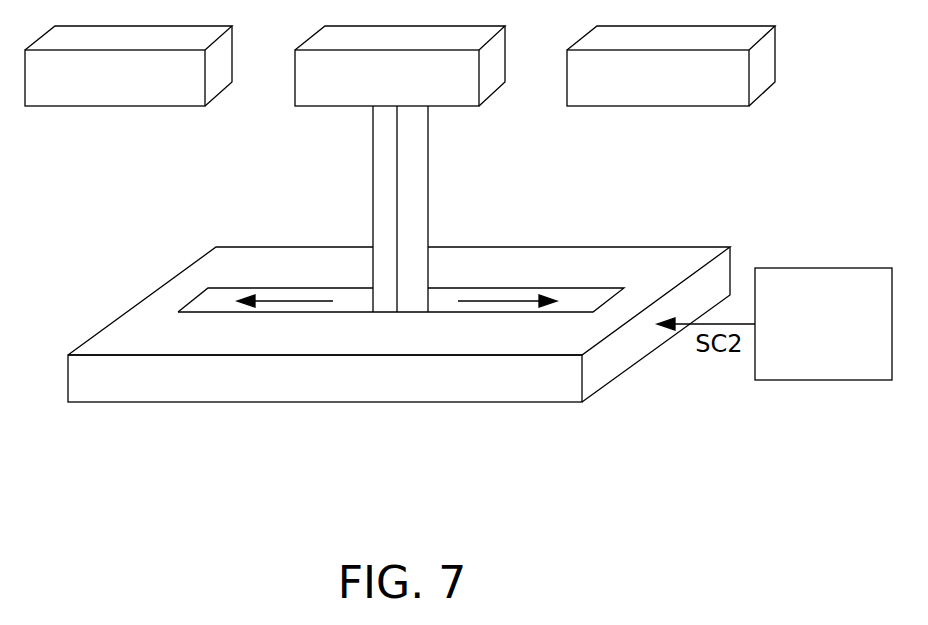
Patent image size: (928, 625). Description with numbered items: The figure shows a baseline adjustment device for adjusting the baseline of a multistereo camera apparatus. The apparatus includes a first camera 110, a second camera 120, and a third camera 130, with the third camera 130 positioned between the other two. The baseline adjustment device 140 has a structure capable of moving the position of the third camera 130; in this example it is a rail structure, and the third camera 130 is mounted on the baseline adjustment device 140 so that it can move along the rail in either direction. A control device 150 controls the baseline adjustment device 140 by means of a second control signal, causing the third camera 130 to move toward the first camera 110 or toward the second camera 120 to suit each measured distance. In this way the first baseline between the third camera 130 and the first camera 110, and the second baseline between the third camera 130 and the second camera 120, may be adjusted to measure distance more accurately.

The first camera 110 is at (177, 107).
The second camera 120 is at (720, 107).
The third camera 130 is at (462, 107).
The baseline adjustment device 140 is at (545, 375).
The control device 150 is at (823, 267).